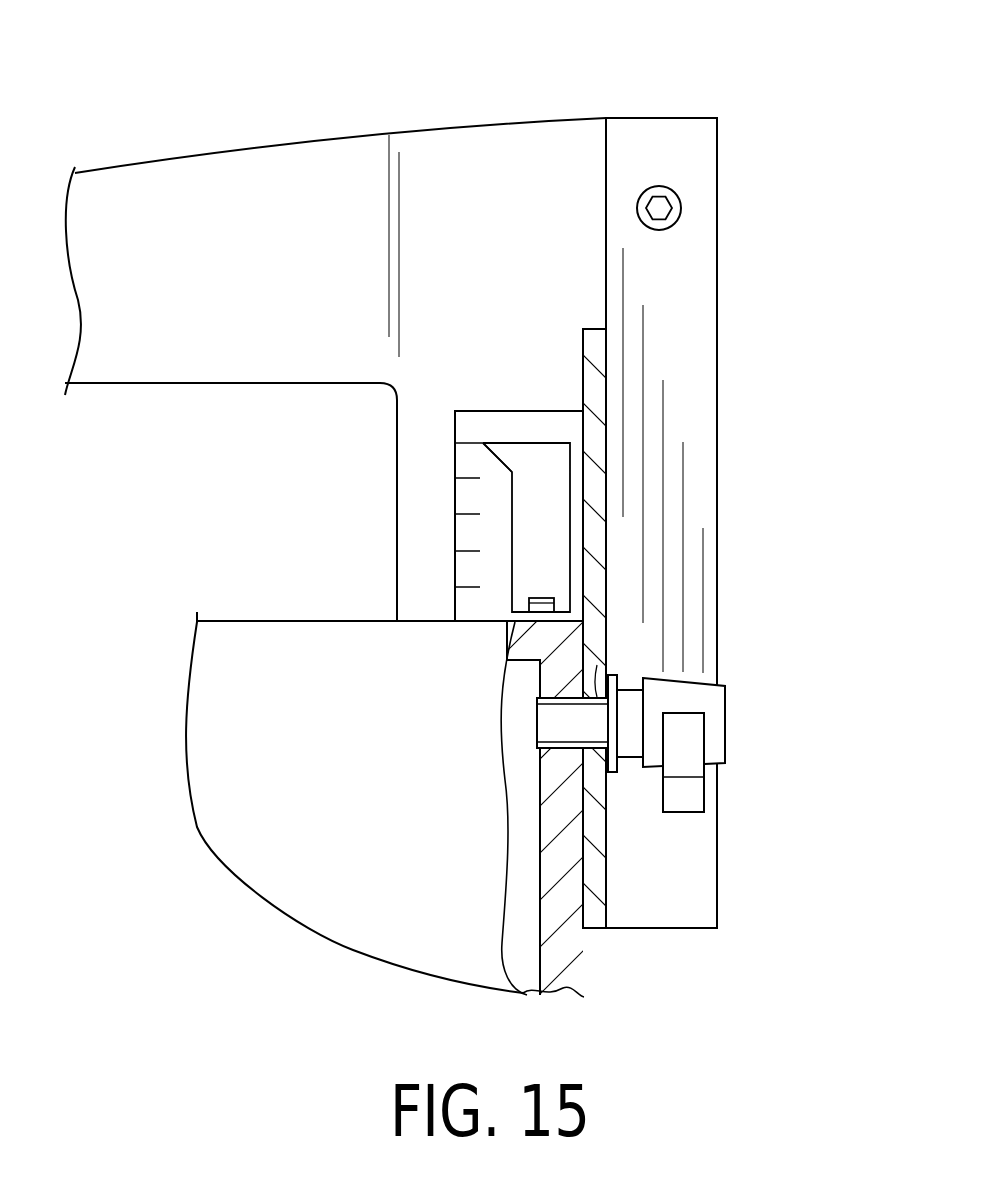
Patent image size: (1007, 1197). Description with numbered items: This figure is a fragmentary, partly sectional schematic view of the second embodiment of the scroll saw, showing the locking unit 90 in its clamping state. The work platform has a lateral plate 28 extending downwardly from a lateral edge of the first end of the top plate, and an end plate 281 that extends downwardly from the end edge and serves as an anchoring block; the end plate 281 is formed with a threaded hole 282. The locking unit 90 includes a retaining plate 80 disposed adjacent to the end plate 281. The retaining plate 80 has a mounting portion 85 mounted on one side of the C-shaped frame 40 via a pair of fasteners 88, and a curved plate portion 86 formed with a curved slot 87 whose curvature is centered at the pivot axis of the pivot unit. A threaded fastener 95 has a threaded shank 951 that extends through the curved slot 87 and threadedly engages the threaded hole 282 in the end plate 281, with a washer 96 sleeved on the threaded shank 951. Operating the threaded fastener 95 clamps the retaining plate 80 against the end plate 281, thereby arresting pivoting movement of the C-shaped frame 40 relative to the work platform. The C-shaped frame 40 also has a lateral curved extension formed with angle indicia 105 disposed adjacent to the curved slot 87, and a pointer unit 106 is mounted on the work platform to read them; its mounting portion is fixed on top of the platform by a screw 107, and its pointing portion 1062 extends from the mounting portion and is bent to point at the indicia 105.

The C-shaped frame 40 is at (335, 355).
The angle indicia 105 is at (460, 468).
The pointing portion 1062 is at (505, 447).
The pointer unit 106 is at (507, 568).
The screw 107 is at (518, 617).
The retaining plate 80 is at (728, 503).
The mounting portion 85 is at (698, 142).
The fasteners 88 is at (668, 208).
The curved plate portion 86 is at (598, 347).
The curved slot 87 is at (597, 665).
The lateral plate 28 is at (555, 800).
The end plate 281 is at (580, 848).
The threaded hole 282 is at (537, 700).
The locking unit 90 is at (611, 724).
The washer 96 is at (615, 680).
The threaded fastener 95 is at (583, 745).
The threaded shank 951 is at (553, 733).